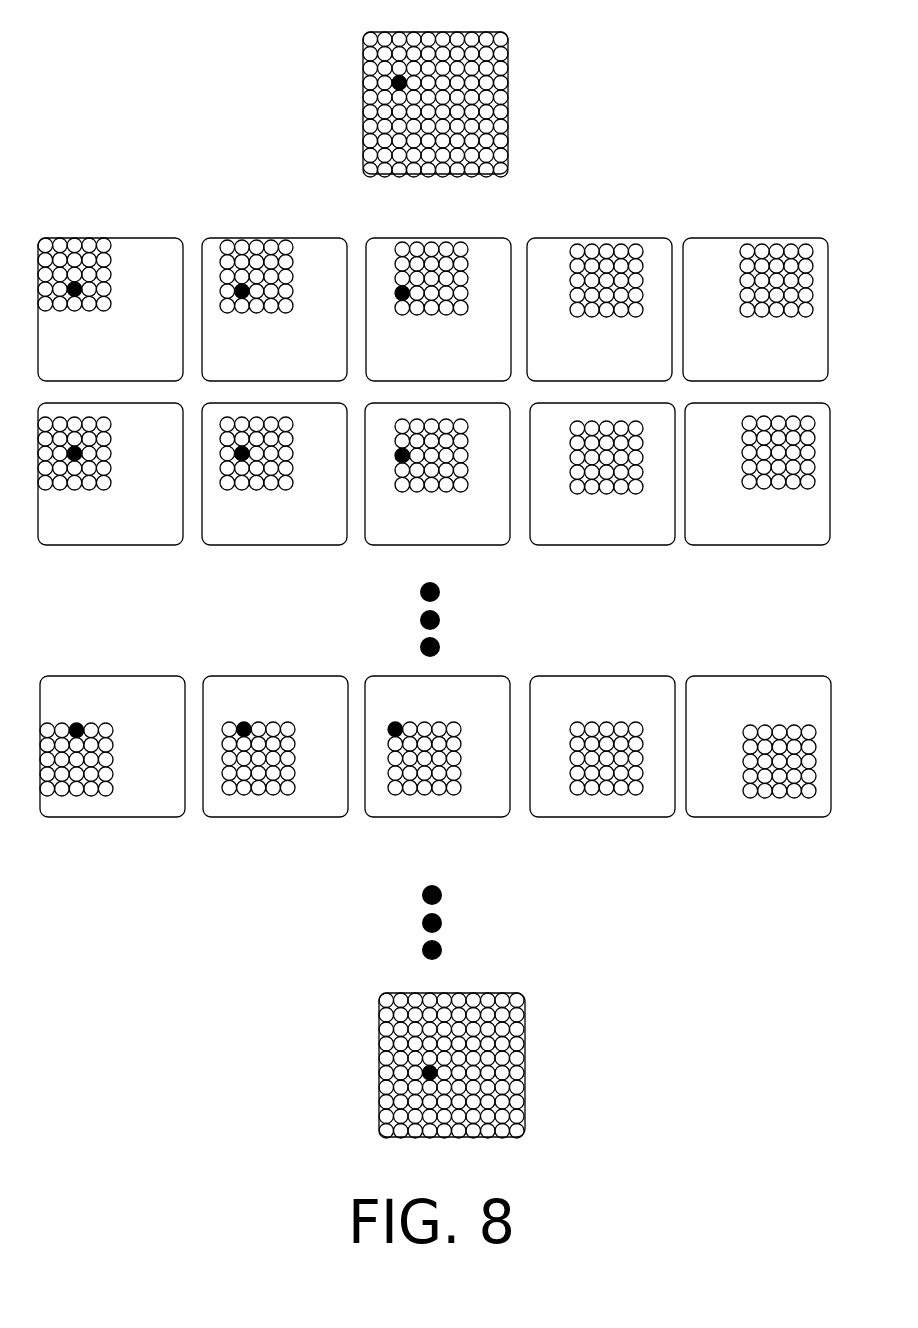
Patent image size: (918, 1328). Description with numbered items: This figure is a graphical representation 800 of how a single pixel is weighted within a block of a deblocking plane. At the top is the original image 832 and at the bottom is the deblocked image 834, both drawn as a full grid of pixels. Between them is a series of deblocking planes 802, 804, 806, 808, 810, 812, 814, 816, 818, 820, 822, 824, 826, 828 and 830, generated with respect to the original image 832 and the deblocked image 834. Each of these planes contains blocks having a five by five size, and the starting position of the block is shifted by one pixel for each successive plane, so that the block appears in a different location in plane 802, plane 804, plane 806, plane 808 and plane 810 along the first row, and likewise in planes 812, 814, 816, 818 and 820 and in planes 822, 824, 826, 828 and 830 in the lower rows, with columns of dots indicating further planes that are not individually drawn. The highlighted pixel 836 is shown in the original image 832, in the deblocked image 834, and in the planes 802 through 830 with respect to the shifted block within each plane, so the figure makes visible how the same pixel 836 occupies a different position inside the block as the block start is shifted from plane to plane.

The graphical representation 800 is at (137, 38).
The deblocking plane 802 is at (74, 222).
The deblocking plane 804 is at (240, 222).
The deblocking plane 806 is at (428, 229).
The deblocking plane 808 is at (611, 229).
The deblocking plane 810 is at (760, 229).
The deblocking plane 812 is at (147, 557).
The deblocking plane 814 is at (300, 557).
The deblocking plane 816 is at (462, 553).
The deblocking plane 818 is at (627, 555).
The deblocking plane 820 is at (783, 555).
The deblocking plane 822 is at (70, 826).
The deblocking plane 824 is at (253, 826).
The deblocking plane 826 is at (430, 827).
The deblocking plane 828 is at (607, 827).
The deblocking plane 830 is at (767, 827).
The original image 832 is at (530, 83).
The deblocked image 834 is at (548, 1048).
The highlighted pixel 836 is at (397, 84).